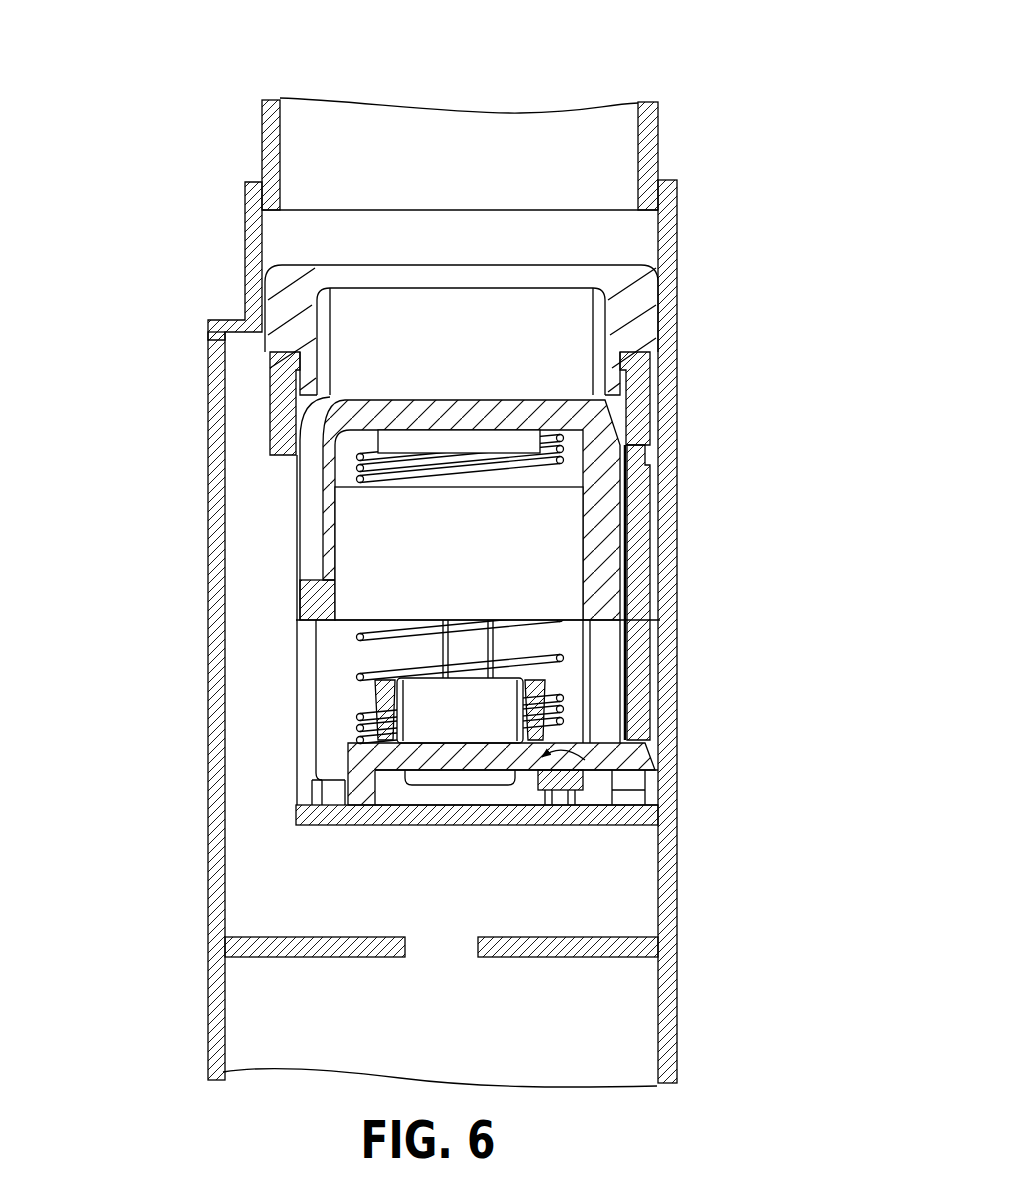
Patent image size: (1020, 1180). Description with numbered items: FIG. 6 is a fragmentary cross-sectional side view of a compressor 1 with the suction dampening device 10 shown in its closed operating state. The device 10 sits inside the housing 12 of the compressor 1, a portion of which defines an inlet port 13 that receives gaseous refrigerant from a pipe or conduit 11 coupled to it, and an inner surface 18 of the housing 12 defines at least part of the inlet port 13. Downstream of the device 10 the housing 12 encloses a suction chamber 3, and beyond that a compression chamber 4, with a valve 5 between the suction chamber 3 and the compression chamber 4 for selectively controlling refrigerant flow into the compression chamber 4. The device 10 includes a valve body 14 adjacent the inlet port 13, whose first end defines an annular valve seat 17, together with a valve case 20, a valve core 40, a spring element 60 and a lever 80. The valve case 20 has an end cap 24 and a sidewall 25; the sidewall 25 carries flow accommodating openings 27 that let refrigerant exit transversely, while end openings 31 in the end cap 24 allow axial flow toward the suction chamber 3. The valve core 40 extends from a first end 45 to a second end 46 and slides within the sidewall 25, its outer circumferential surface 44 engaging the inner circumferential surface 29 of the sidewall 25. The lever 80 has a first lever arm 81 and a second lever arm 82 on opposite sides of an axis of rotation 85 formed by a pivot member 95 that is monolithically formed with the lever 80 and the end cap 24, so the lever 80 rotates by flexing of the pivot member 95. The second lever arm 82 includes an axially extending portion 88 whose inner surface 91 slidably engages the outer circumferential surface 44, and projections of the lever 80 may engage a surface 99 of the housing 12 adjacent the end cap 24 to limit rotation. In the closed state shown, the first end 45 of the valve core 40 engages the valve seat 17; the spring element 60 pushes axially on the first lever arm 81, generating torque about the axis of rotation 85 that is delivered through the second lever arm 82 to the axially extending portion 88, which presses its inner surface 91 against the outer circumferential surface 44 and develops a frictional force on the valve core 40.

The compressor 1 is at (724, 103).
The suction chamber 3 is at (284, 820).
The compression chamber 4 is at (318, 973).
The valve 5 is at (435, 947).
The suction dampening device 10 is at (634, 252).
The conduit 11 is at (275, 150).
The housing 12 is at (672, 372).
The inlet port 13 is at (232, 235).
The valve body 14 is at (654, 306).
The valve seat 17 is at (600, 395).
The inner surface 18 is at (263, 234).
The valve case 20 is at (258, 372).
The end cap 24 is at (315, 783).
The sidewall 25 is at (278, 432).
The flow accommodating opening 27 is at (275, 549).
The inner circumferential surface 29 is at (300, 445).
The end opening 31 is at (325, 850).
The valve core 40 is at (645, 600).
The outer circumferential surface 44 is at (603, 595).
The first end 45 is at (438, 395).
The second end 46 is at (645, 635).
The spring element 60 is at (567, 535).
The lever 80 is at (656, 766).
The first lever arm 81 is at (447, 760).
The second lever arm 82 is at (738, 695).
The axis of rotation 85 is at (547, 772).
The axially extending portion 88 is at (642, 620).
The inner surface 91 is at (548, 390).
The pivot member 95 is at (570, 790).
The surface 99 is at (433, 813).